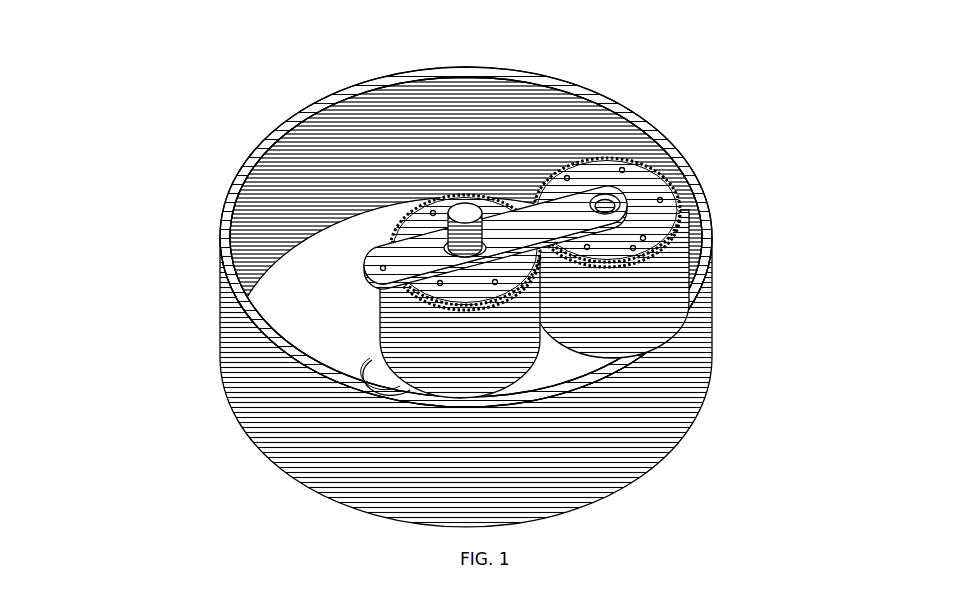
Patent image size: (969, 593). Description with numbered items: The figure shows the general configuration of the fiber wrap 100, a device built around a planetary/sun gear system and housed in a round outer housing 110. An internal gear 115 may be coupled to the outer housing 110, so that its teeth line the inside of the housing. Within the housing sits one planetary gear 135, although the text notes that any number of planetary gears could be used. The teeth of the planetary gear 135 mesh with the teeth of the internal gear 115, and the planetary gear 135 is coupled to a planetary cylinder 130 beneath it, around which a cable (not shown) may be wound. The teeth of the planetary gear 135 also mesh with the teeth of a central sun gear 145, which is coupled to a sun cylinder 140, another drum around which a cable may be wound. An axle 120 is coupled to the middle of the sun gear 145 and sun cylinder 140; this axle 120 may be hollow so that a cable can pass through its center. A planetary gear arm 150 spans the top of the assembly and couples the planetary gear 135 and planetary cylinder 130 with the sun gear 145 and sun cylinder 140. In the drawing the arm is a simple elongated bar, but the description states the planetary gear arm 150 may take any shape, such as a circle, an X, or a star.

The fiber wrap 100 is at (168, 227).
The outer housing 110 is at (466, 267).
The internal gear 115 is at (613, 125).
The axle 120 is at (468, 212).
The planetary cylinder 130 is at (627, 328).
The planetary gear 135 is at (580, 168).
The sun cylinder 140 is at (410, 355).
The sun gear 145 is at (410, 211).
The planetary gear arm 150 is at (367, 253).